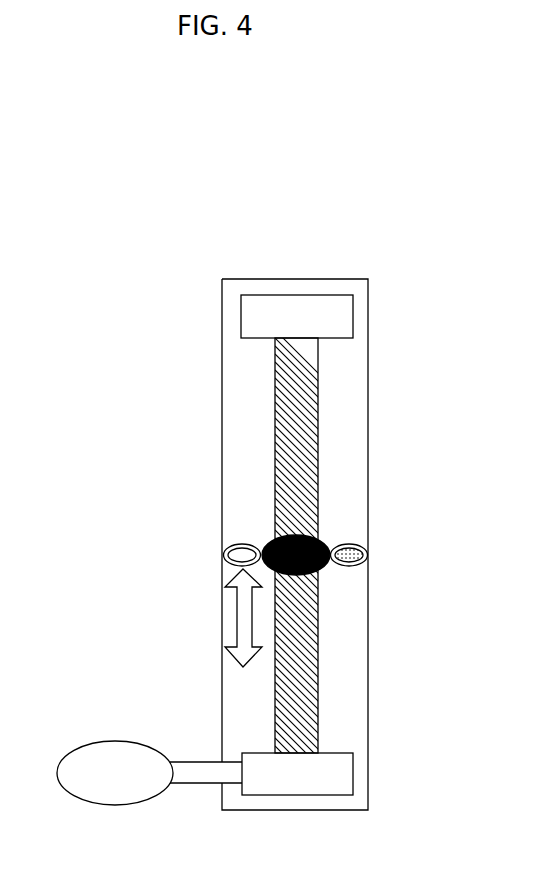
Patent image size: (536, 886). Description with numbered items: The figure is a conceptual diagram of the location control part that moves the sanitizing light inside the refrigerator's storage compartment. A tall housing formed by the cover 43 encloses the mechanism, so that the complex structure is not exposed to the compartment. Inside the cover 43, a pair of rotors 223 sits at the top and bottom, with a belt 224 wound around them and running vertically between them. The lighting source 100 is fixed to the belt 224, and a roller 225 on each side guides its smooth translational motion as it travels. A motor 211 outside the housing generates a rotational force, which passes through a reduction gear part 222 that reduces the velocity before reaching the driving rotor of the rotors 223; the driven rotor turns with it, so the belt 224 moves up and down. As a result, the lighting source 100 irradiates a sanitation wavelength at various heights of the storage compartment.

The cover 43 is at (368, 453).
The lighting source 100 is at (323, 573).
The motor 211 is at (117, 805).
The reduction gear part 222 is at (198, 778).
The rotors 223 is at (353, 315).
The belt 224 is at (310, 617).
The roller 225 is at (223, 553).